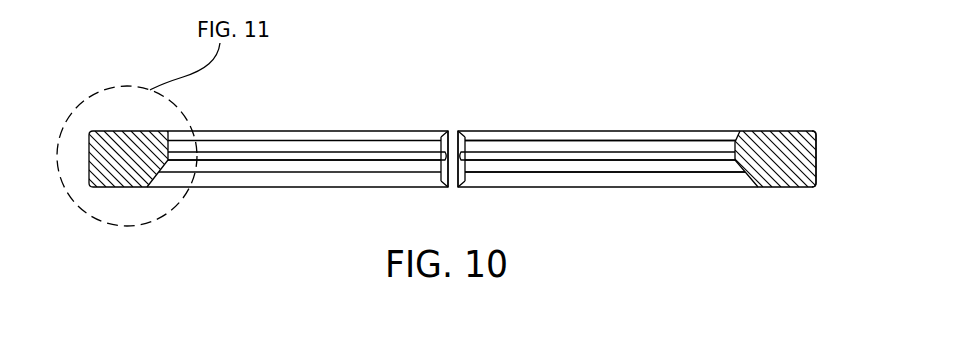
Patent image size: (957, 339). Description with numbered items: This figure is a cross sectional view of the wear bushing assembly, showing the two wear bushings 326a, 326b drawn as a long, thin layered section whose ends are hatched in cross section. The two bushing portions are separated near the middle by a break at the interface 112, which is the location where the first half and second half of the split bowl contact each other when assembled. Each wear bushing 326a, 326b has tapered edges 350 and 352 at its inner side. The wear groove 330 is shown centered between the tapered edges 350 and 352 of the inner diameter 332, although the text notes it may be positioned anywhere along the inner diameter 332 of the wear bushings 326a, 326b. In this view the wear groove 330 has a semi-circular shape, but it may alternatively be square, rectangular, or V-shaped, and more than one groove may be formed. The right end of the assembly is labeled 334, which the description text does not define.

The wear bushing 326a is at (313, 131).
The wear bushing 326b is at (692, 131).
The interface 112 is at (452, 131).
The tapered edge 350 is at (563, 131).
The right end 334 is at (816, 158).
The wear groove 330 is at (275, 157).
The tapered edge 352 is at (560, 180).
The inner diameter 332 is at (617, 163).